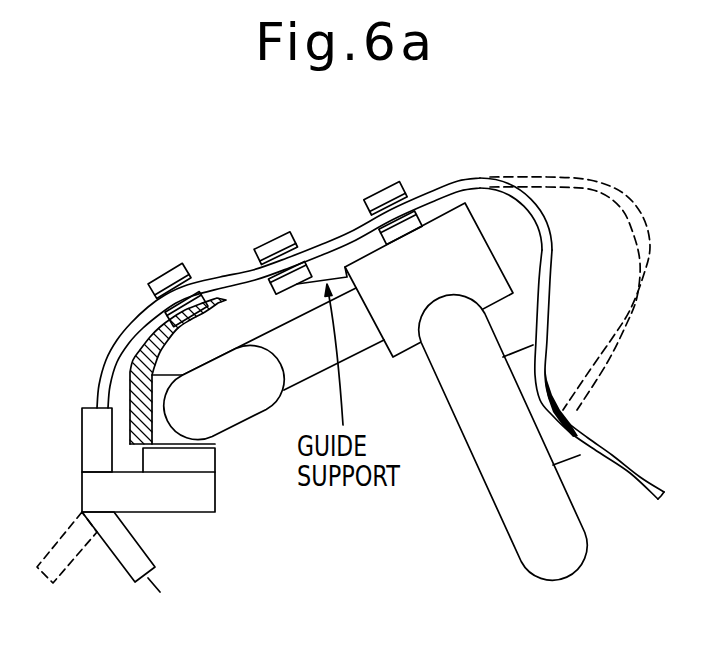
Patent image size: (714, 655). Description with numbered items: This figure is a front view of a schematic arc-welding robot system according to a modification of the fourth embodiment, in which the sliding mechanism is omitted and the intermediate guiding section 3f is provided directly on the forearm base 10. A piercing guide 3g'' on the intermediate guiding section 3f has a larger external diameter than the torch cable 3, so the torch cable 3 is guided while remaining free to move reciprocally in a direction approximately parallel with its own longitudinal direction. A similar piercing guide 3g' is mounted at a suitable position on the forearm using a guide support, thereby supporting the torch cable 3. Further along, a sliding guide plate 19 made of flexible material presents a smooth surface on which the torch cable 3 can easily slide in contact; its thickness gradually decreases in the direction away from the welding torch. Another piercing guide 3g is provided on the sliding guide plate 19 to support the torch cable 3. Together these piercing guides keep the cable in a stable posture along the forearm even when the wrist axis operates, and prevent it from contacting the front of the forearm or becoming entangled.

The torch cable 3 is at (122, 300).
The piercing guide 3g is at (172, 250).
The piercing guide 3g' is at (283, 218).
The piercing guide 3g'' is at (371, 173).
The intermediate guiding section 3f is at (430, 172).
The forearm base 10 is at (455, 268).
The sliding guide plate 19 is at (133, 375).